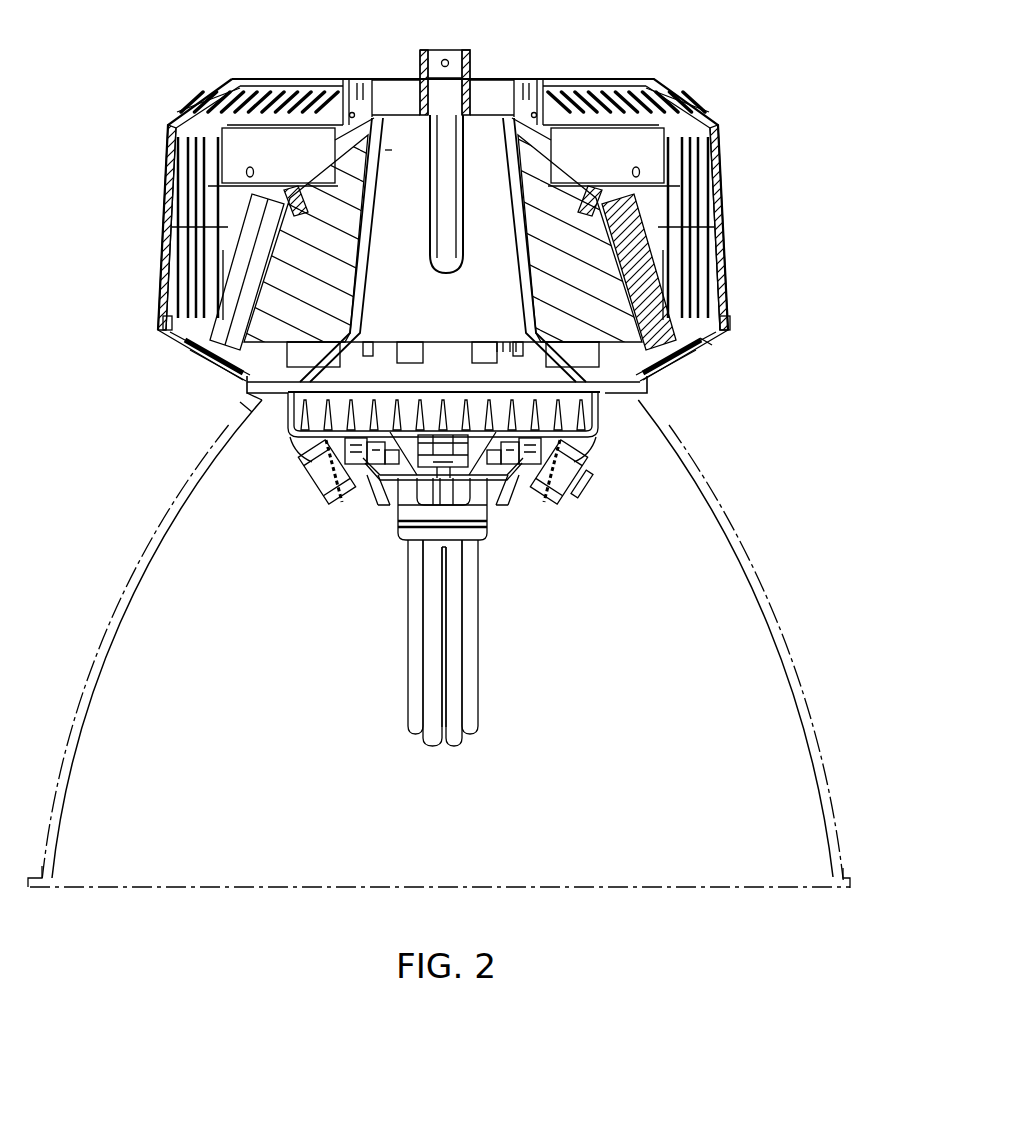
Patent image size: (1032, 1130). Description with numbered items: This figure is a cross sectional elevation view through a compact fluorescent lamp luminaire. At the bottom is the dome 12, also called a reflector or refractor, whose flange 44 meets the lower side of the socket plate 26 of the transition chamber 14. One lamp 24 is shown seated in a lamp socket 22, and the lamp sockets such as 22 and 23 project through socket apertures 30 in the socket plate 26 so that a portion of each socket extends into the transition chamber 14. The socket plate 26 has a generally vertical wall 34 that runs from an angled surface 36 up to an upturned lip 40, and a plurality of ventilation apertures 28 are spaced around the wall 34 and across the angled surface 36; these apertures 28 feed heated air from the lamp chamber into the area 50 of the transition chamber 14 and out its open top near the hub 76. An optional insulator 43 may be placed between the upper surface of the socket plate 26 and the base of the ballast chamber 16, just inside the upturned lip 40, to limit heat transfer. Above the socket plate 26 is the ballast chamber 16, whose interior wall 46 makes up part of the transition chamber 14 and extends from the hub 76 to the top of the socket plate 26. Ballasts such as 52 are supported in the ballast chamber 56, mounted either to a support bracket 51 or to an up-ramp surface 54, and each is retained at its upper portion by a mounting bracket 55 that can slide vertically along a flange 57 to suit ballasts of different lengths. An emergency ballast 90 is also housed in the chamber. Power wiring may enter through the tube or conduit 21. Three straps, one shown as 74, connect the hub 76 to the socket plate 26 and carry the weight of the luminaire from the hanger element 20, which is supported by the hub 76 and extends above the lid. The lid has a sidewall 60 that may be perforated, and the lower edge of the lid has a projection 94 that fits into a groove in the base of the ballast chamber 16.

The dome 12 is at (765, 594).
The transition chamber 14 is at (480, 160).
The ballast chamber 16 is at (148, 337).
The hanger element 20 is at (466, 58).
The tube or conduit 21 is at (463, 185).
The lamp socket 22 is at (586, 476).
The lamp socket 23 is at (512, 352).
The lamp 24 is at (478, 672).
The socket plate 26 is at (487, 487).
The ventilation aperture 28 is at (318, 452).
The socket aperture 30 is at (582, 462).
The wall 34 is at (620, 427).
The angled surface 36 is at (296, 428).
The upturned lip 40 is at (248, 395).
The insulator 43 is at (636, 393).
The flange 44 is at (254, 416).
The interior wall 46 is at (362, 294).
The area 50 is at (414, 256).
The support bracket 51 is at (240, 370).
The ballast 52 is at (708, 344).
The up-ramp surface 54 is at (196, 356).
The mounting bracket 55 is at (590, 205).
The ballast chamber 56 is at (658, 200).
The flange 57 is at (331, 280).
The sidewall 60 is at (726, 282).
The strap 74 is at (388, 150).
The hub 76 is at (491, 92).
The emergency ballast 90 is at (660, 140).
The projection 94 is at (730, 326).